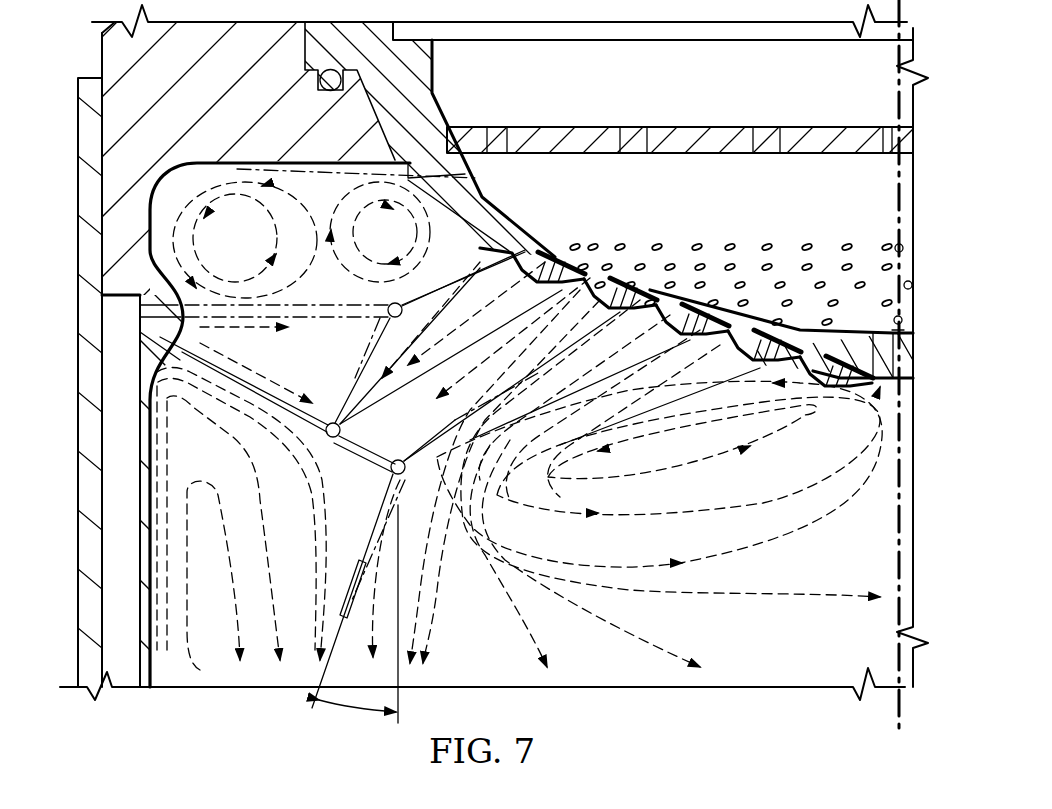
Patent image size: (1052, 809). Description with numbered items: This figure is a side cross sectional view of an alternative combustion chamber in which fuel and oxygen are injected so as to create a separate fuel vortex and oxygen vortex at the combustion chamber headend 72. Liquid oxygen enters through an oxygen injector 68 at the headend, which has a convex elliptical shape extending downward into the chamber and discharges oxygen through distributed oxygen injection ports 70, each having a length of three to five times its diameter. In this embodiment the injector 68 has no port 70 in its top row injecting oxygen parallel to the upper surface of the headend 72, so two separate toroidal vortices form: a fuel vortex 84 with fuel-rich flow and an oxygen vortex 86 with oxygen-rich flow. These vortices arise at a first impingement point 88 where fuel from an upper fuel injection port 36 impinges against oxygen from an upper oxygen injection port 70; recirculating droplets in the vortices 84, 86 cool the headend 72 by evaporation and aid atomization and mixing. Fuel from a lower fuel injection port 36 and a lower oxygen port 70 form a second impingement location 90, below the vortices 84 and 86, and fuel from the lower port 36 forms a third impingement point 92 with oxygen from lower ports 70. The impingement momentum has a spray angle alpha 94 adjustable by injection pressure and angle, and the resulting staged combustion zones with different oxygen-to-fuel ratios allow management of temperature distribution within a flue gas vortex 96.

The fuel injection port 36 is at (153, 310).
The oxygen injector 68 is at (854, 197).
The oxygen injection port 70 is at (537, 247).
The combustion chamber headend 72 is at (210, 158).
The fuel vortex 84 is at (221, 252).
The oxygen vortex 86 is at (369, 242).
The first injection point 88 is at (388, 315).
The second impingement location 90 is at (340, 428).
The third impingement point 92 is at (394, 470).
The spray angle alpha 94 is at (352, 712).
The flue gas vortex 96 is at (199, 616).